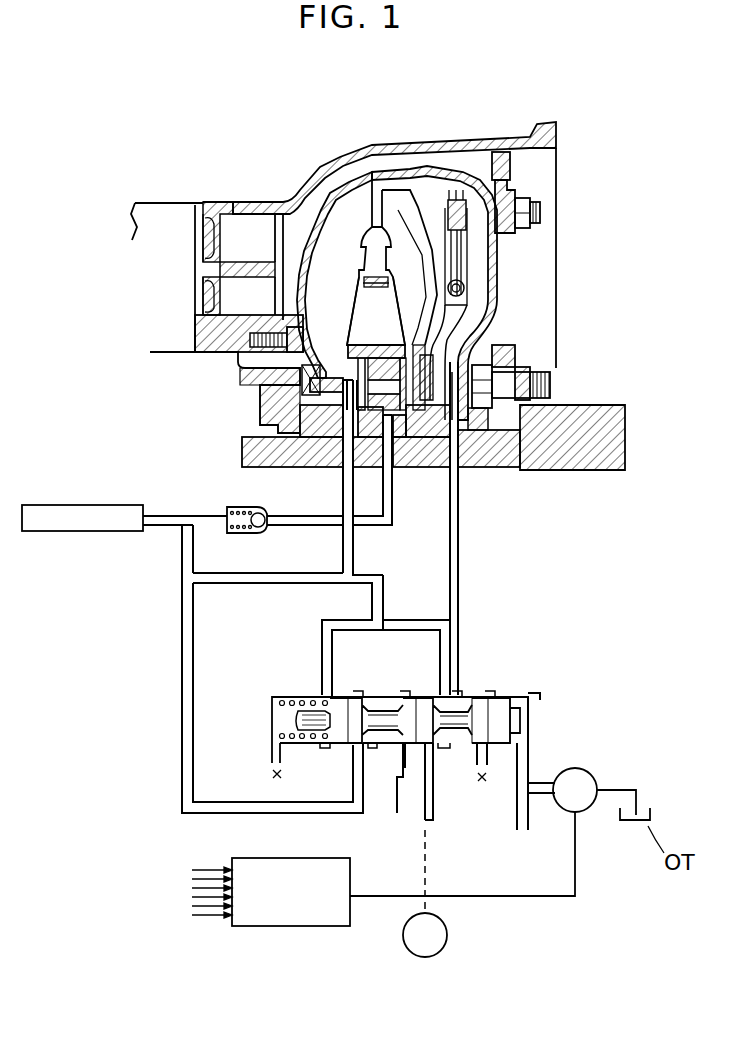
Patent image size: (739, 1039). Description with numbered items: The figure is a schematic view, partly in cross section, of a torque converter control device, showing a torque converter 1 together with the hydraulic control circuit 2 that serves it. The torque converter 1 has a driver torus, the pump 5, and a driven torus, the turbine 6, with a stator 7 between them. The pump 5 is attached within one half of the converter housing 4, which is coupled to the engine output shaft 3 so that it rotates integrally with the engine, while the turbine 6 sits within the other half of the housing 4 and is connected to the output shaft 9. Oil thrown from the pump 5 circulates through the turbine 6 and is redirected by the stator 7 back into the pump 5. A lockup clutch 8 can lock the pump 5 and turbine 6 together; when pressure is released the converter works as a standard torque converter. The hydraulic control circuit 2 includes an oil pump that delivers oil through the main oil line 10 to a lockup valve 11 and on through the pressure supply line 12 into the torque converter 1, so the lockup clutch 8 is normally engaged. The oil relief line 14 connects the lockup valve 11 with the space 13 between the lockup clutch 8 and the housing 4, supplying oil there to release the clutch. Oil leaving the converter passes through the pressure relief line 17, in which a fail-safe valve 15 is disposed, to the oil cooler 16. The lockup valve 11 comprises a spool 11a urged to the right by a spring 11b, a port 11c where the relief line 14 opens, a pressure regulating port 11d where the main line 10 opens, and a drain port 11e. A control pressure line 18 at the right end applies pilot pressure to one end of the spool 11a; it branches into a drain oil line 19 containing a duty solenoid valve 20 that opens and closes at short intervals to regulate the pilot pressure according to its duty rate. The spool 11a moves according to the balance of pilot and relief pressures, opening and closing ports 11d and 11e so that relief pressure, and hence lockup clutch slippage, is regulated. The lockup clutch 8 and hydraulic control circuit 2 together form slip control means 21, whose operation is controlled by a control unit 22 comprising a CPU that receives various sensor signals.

The torque converter 1 is at (445, 160).
The hydraulic control circuit 2 is at (502, 580).
The engine output shaft 3 is at (594, 415).
The converter housing 4 is at (386, 166).
The pump 5 is at (343, 212).
The turbine 6 is at (399, 200).
The stator 7 is at (372, 307).
The lockup clutch 8 is at (472, 420).
The output shaft 9 is at (310, 453).
The main oil line 10 is at (422, 803).
The lockup valve 11 is at (423, 736).
The spool 11a is at (495, 710).
The spring 11b is at (283, 700).
The port 11c is at (453, 692).
The pressure regulating port 11d is at (433, 748).
The drain port 11e is at (487, 748).
The pressure supply line 12 is at (355, 546).
The space 13 is at (471, 322).
The oil relief line 14 is at (460, 535).
The fail-safe valve 15 is at (243, 534).
The oil cooler 16 is at (105, 505).
The pressure relief line 17 is at (393, 500).
The control pressure line 18 is at (517, 817).
The drain oil line 19 is at (541, 782).
The duty solenoid valve 20 is at (582, 769).
The slip control means 21 is at (556, 505).
The control unit 22 is at (288, 928).